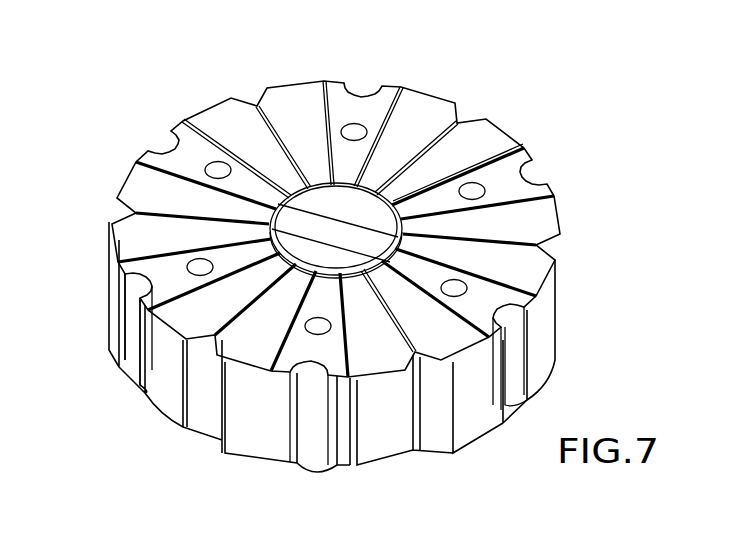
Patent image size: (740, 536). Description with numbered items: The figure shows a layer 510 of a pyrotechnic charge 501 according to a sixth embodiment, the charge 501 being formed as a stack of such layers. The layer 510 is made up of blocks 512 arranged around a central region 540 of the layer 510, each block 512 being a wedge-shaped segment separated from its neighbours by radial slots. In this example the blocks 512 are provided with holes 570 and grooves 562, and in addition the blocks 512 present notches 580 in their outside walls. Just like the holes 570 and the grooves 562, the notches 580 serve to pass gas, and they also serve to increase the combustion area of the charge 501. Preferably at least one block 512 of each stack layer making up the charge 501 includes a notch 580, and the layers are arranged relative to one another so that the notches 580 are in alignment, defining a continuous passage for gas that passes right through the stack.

The pyrotechnic charge 501 is at (498, 70).
The layer 510 is at (562, 247).
The block 512 is at (292, 97).
The central hub 540 is at (508, 152).
The groove 562 is at (520, 316).
The hole 570 is at (350, 124).
The notch 580 is at (164, 142).